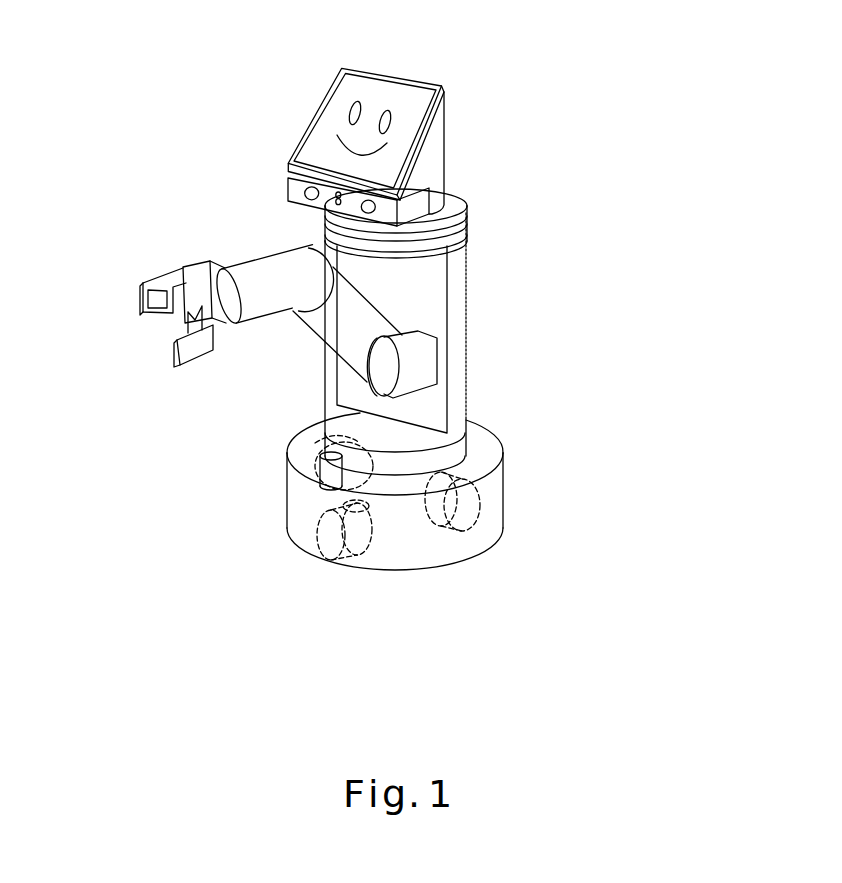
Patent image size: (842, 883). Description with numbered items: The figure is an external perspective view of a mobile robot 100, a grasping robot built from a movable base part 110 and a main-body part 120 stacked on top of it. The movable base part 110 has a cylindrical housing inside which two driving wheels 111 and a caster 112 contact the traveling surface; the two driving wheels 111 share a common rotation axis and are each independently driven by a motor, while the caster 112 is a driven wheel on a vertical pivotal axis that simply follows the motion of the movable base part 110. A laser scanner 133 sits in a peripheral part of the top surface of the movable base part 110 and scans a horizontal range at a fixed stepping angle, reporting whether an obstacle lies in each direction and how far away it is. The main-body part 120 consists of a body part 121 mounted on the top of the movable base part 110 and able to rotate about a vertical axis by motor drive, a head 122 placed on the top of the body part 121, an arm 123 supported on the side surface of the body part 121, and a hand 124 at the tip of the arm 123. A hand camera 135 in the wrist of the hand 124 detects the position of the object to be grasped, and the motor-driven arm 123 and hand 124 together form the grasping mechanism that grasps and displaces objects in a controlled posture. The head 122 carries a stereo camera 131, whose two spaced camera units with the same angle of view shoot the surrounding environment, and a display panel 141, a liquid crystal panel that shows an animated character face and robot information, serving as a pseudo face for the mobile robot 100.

The mobile robot 100 is at (131, 36).
The movable base part 110 is at (571, 418).
The driving wheels 111 is at (315, 443).
The caster 112 is at (367, 575).
The main-body part 120 is at (571, 62).
The body part 121 is at (464, 359).
The head 122 is at (433, 161).
The arm 123 is at (337, 325).
The hand 124 is at (195, 357).
The stereo camera 131 is at (313, 202).
The laser scanner 133 is at (320, 473).
The hand camera 135 is at (202, 278).
The display panel 141 is at (343, 95).